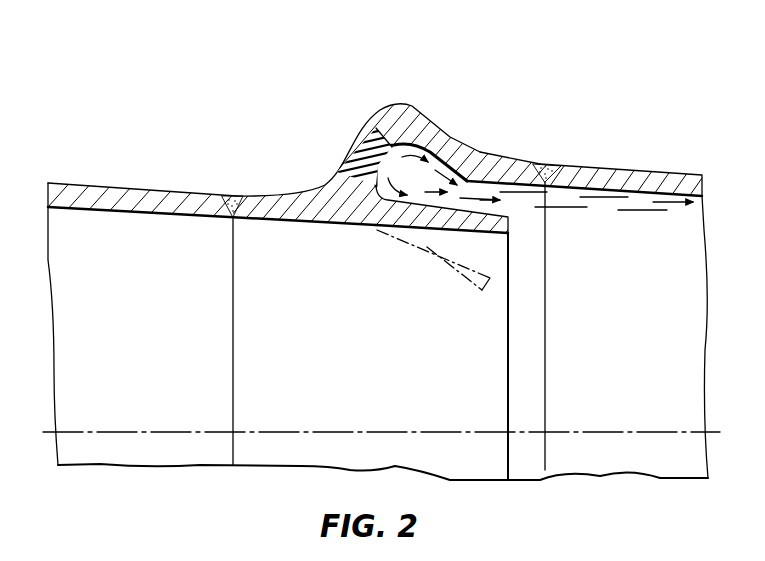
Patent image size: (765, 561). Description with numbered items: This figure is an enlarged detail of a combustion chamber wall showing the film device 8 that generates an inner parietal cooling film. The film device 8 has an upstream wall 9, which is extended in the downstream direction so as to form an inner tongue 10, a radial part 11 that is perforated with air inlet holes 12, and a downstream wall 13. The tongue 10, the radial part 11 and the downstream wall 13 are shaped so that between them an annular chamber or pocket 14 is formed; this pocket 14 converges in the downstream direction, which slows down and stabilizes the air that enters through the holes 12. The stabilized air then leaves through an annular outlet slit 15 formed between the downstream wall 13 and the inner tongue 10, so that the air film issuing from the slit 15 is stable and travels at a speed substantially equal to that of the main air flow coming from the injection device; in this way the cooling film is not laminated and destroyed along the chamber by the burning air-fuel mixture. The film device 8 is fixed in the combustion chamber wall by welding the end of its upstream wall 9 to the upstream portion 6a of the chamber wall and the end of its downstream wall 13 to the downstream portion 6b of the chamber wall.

The upstream portion of the combustion chamber wall 6a is at (160, 205).
The downstream portion of the combustion chamber wall 6b is at (623, 175).
The film device 8 is at (437, 110).
The upstream wall 9 is at (317, 210).
The inner tongue 10 is at (509, 230).
The radial part 11 is at (382, 132).
The air inlet holes 12 is at (350, 155).
The downstream wall 13 is at (502, 162).
The annular chamber or pocket 14 is at (420, 178).
The annular outlet slit 15 is at (517, 198).